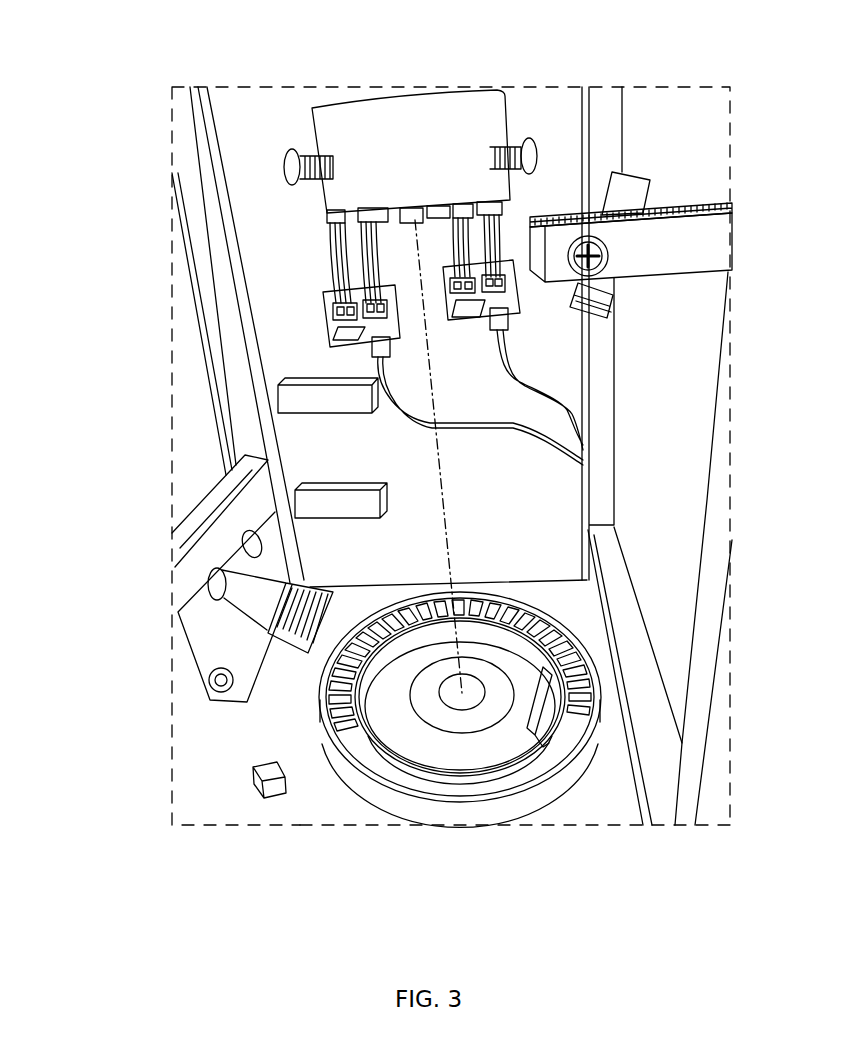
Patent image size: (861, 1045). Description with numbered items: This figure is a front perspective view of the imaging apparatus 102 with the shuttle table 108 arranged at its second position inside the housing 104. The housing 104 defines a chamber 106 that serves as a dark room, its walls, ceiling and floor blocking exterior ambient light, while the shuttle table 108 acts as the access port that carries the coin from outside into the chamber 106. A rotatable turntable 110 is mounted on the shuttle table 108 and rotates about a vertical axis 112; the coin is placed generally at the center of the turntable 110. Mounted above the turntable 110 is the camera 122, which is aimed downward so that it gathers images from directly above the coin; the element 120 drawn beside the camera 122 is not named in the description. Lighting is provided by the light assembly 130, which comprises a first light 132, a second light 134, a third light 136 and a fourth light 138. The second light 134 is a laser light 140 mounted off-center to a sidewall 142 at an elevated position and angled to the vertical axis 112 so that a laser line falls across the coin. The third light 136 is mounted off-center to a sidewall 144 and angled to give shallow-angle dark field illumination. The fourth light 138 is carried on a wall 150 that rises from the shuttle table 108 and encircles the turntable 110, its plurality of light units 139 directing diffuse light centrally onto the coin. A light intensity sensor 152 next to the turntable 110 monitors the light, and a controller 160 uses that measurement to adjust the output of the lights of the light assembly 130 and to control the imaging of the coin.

The imaging apparatus 102 is at (157, 121).
The housing 104 is at (201, 783).
The chamber 106 is at (293, 362).
The shuttle table 108 is at (303, 800).
The turntable 110 is at (387, 717).
The vertical axis 112 is at (450, 508).
The motor housing 120 is at (387, 138).
The camera 122 is at (455, 128).
The light assembly 130 is at (224, 606).
The first light 132 is at (325, 215).
The second light 134 is at (650, 183).
The third light 136 is at (263, 611).
The fourth light 138 is at (502, 612).
The light units 139 is at (467, 600).
The laser light 140 is at (633, 200).
The sidewall 142 is at (712, 578).
The sidewall 144 is at (193, 408).
The wall 150 is at (447, 808).
The light intensity sensor 152 is at (262, 797).
The controller 160 is at (553, 335).